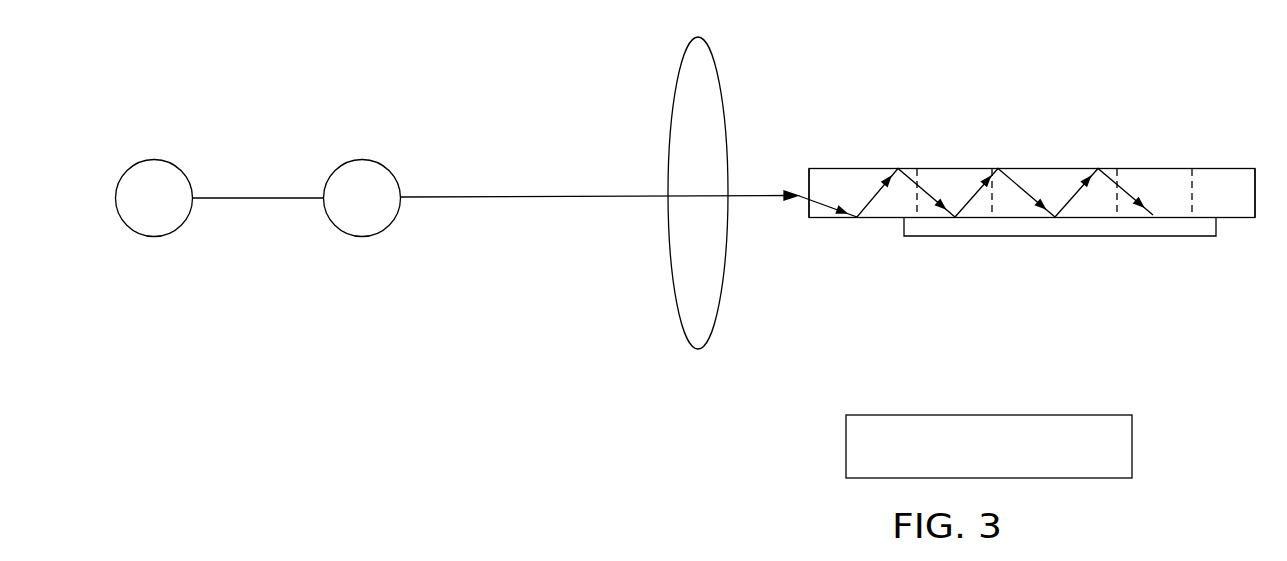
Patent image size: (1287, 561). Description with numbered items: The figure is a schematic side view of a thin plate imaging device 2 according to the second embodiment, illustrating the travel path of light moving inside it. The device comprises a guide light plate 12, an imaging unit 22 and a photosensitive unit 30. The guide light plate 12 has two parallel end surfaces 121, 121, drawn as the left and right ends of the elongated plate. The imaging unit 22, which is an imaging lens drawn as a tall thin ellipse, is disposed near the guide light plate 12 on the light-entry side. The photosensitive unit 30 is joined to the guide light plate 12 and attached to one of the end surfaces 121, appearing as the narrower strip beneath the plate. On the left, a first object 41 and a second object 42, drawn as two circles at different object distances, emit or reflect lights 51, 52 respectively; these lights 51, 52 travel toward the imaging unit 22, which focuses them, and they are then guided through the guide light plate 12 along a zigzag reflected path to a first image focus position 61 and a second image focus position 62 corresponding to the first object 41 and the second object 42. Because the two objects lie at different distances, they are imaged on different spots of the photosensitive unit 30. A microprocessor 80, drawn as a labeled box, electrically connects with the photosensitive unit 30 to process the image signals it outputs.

The thin plate imaging device 2 is at (917, 110).
The guide light plate 12 is at (1053, 168).
The imaging unit 22 is at (703, 323).
The photosensitive unit 30 is at (1048, 232).
The first object 41 is at (149, 218).
The second object 42 is at (358, 218).
The light 51 is at (245, 198).
The light 52 is at (495, 197).
The first image focus position 61 is at (970, 168).
The second image focus position 62 is at (1168, 168).
The microprocessor 80 is at (1125, 431).
The end surface 121 is at (851, 168).